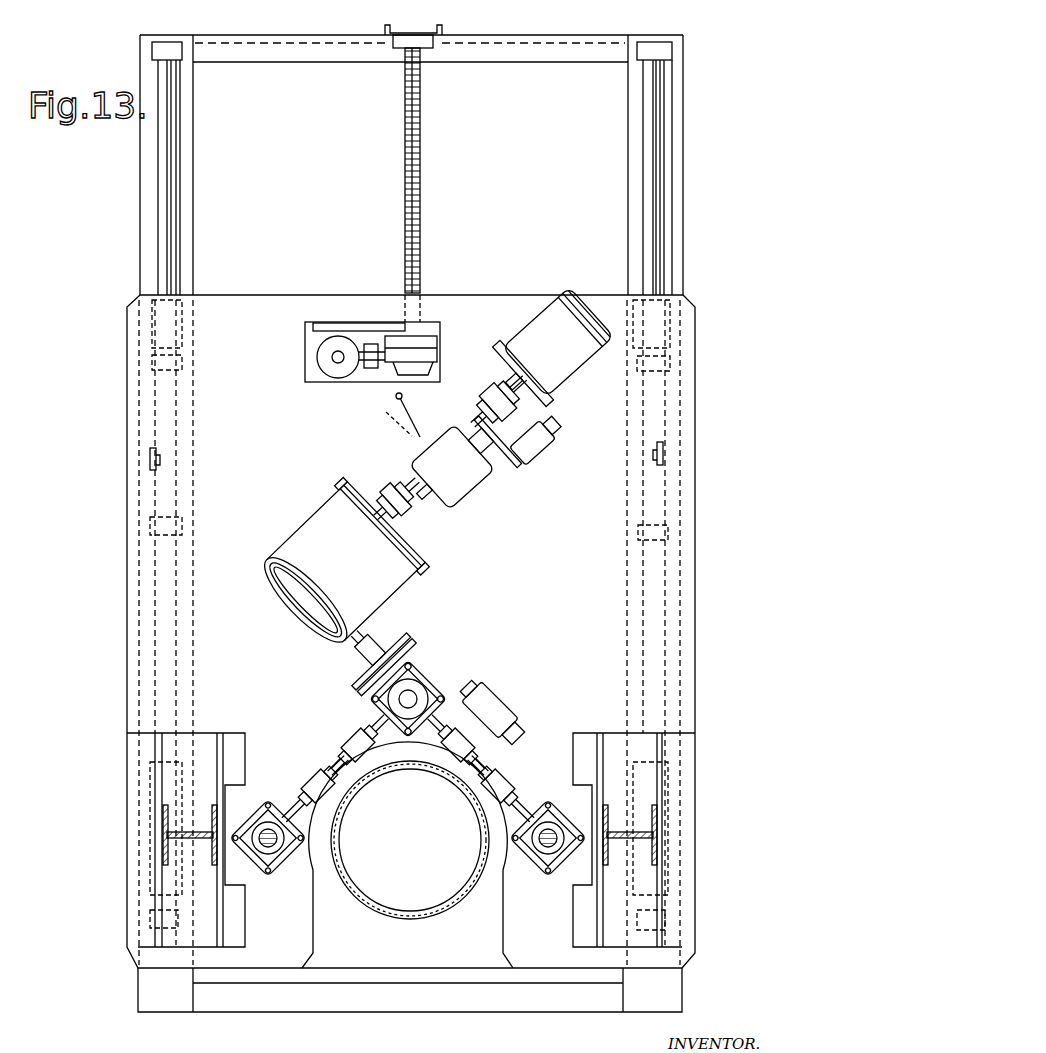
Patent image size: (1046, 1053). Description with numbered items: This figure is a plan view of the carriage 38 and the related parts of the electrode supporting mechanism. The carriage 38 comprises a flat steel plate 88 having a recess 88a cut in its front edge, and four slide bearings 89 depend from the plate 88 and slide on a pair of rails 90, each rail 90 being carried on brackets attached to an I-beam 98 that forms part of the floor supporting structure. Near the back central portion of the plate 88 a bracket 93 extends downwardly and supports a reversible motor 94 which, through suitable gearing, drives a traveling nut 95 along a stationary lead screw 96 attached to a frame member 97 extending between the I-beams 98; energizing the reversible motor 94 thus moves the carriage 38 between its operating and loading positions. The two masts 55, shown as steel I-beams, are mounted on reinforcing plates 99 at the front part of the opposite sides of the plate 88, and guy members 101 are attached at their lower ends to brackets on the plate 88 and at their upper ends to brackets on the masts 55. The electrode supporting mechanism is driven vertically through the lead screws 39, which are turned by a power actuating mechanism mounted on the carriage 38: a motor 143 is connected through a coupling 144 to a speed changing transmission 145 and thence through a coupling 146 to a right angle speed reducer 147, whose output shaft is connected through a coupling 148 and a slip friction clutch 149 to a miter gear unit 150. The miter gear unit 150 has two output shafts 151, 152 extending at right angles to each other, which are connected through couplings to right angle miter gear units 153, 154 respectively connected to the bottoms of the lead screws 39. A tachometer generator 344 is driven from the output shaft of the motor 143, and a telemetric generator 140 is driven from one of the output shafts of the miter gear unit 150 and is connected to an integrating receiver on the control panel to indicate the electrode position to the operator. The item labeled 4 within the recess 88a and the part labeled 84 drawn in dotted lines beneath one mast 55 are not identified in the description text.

The cylindrical workpiece 4 is at (409, 912).
The carriage 38 is at (708, 356).
The lead screws 39 is at (276, 842).
The masts 55 is at (175, 832).
The hidden support block 84 is at (148, 882).
The flat steel plate 88 is at (502, 297).
The recess 88a is at (500, 930).
The slide bearings 89 is at (148, 310).
The rails 90 is at (166, 226).
The bracket 93 is at (374, 349).
The reversible motor 94 is at (318, 365).
The traveling nut 95 is at (433, 342).
The lead screw 96 is at (421, 166).
The frame member 97 is at (512, 58).
The I-beam 98 is at (190, 118).
The reinforcing plates 99 is at (128, 932).
The guy members 101 is at (150, 460).
The telemetric generator 140 is at (500, 700).
The motor 143 is at (570, 378).
The coupling 144 is at (486, 398).
The speed changing transmission 145 is at (464, 492).
The coupling 146 is at (388, 492).
The right angle speed reducer 147 is at (303, 506).
The coupling 148 is at (382, 648).
The slip friction clutch 149 is at (412, 646).
The miter gear unit 150 is at (440, 676).
The output shaft 151 is at (368, 727).
The output shaft 152 is at (462, 736).
The right angle miter gear unit 153 is at (282, 804).
The right angle miter gear unit 154 is at (568, 808).
The tachometer generator 344 is at (541, 452).